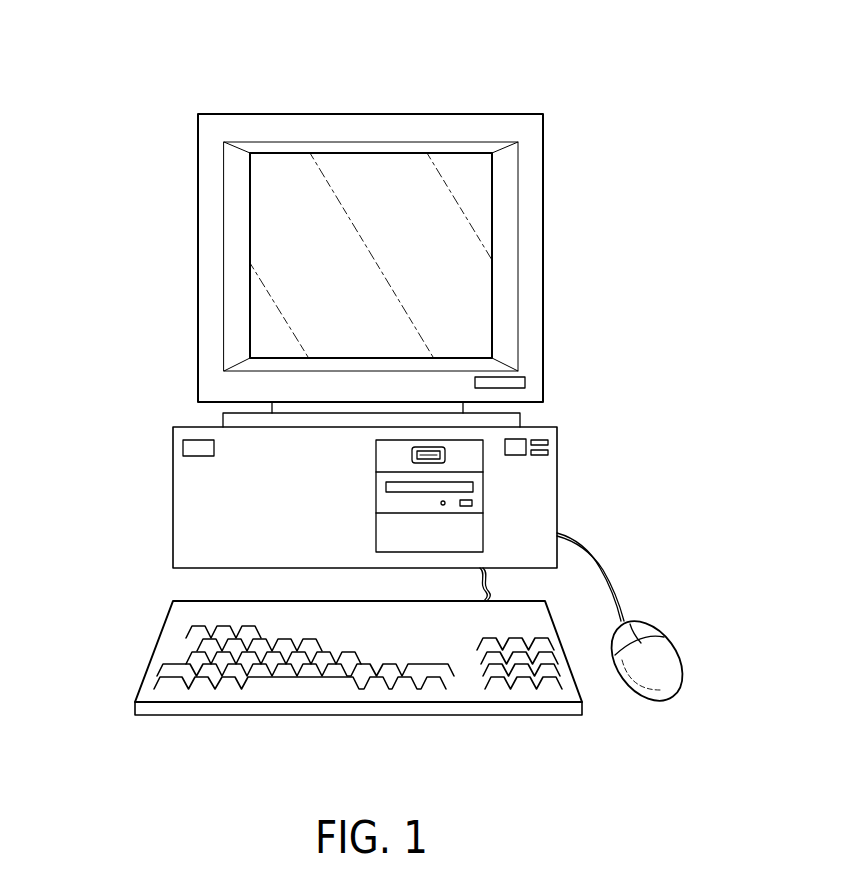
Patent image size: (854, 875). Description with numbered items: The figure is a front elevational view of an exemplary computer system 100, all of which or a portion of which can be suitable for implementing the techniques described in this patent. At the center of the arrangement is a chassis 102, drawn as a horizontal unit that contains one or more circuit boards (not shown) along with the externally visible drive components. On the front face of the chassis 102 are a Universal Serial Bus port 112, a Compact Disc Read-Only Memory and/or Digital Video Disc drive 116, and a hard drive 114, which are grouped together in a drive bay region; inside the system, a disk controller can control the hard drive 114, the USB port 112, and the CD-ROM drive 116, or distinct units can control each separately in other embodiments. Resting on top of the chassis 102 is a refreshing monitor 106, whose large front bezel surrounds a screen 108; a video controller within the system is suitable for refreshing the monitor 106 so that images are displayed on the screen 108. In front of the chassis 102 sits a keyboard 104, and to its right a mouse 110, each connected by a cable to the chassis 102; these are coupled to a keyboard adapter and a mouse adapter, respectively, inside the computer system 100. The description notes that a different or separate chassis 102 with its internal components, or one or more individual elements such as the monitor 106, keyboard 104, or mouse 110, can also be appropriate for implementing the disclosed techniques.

The computer system 100 is at (540, 90).
The chassis 102 is at (173, 498).
The keyboard 104 is at (157, 643).
The refreshing monitor 106 is at (268, 113).
The screen 108 is at (297, 258).
The mouse 110 is at (663, 652).
The Universal Serial Bus (USB) port 112 is at (445, 452).
The hard drive 114 is at (475, 531).
The CD-ROM and/or DVD drive 116 is at (476, 492).